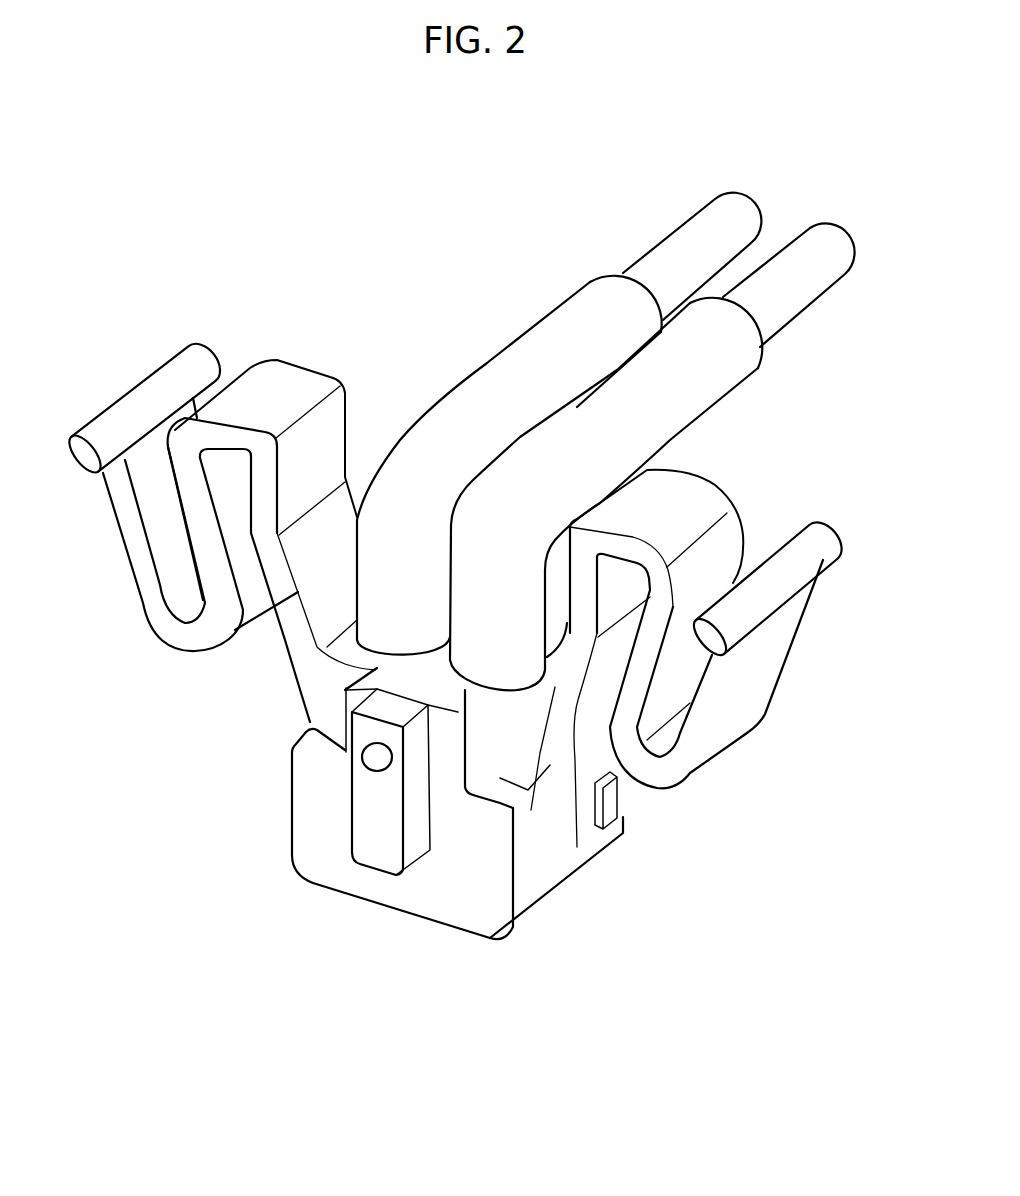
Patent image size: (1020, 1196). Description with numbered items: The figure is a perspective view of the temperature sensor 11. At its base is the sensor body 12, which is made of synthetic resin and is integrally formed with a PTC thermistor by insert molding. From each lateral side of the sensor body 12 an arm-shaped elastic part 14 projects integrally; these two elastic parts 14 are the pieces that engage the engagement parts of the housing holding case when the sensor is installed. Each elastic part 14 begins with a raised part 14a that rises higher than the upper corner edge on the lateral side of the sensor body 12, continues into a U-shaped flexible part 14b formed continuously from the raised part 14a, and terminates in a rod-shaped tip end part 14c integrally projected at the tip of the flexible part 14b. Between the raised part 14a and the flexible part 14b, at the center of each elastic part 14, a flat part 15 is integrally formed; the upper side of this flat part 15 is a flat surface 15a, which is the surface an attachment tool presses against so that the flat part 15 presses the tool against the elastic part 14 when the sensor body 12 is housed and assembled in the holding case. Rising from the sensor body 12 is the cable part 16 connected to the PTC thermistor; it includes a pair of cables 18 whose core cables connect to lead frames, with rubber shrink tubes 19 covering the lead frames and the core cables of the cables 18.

The temperature sensor 11 is at (427, 935).
The sensor body 12 is at (543, 903).
The elastic parts 14 is at (474, 590).
The raised part 14a is at (312, 590).
The flexible part 14b is at (138, 555).
The tip end part 14c is at (140, 387).
The flat part 15 is at (483, 503).
The flat surface 15a is at (289, 360).
The cable part 16 is at (622, 433).
The cables 18 is at (670, 242).
The shrink tubes 19 is at (548, 313).